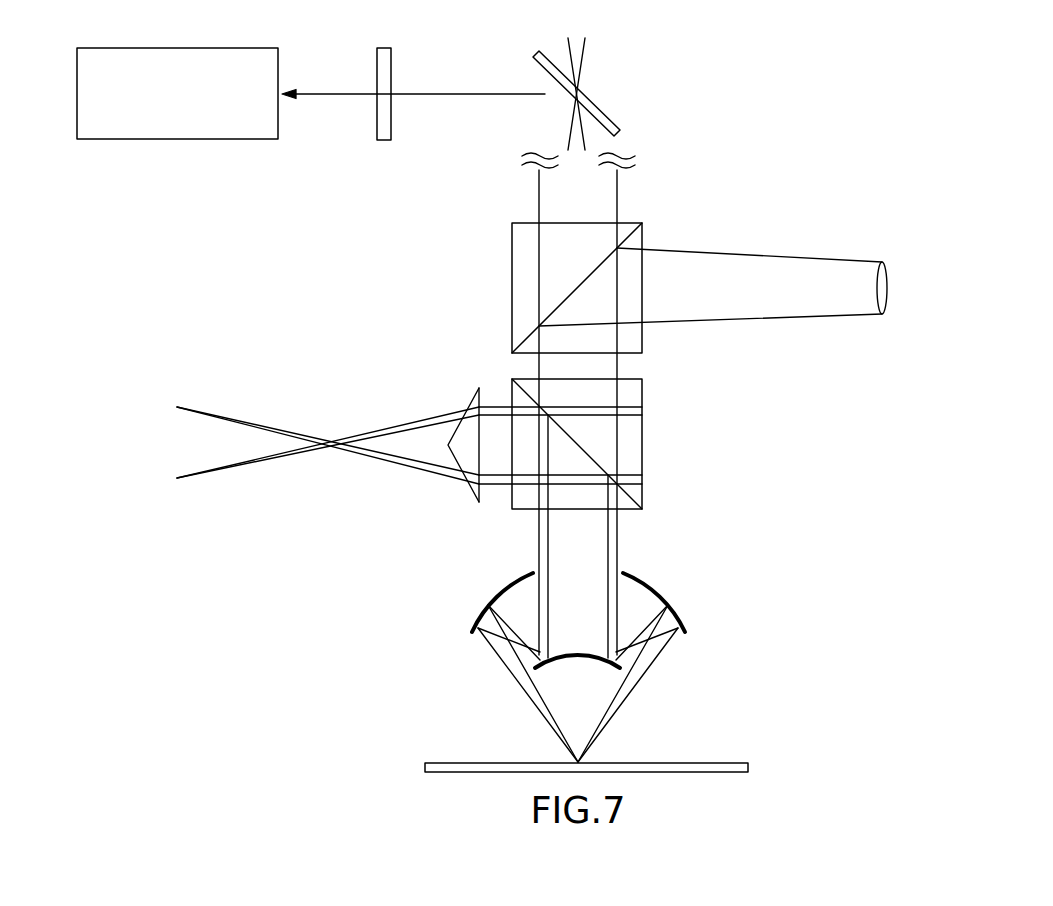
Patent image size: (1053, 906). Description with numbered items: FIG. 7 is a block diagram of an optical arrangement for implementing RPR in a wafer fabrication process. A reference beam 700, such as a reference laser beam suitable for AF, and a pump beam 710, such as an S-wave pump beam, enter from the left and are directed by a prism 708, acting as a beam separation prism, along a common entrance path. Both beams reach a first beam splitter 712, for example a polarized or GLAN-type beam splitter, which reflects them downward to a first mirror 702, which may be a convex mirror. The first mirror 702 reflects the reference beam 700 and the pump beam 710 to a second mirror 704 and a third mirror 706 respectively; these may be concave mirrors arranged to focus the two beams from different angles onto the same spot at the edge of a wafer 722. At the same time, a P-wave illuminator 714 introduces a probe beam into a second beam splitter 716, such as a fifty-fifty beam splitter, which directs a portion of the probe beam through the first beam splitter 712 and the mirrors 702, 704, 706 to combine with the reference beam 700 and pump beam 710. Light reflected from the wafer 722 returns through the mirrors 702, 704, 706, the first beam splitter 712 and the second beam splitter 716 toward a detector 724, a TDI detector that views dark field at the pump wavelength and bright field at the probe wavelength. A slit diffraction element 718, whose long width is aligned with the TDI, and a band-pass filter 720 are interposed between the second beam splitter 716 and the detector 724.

The reference beam 700 is at (272, 430).
The first mirror 702 is at (598, 664).
The second mirror 704 is at (486, 598).
The third mirror 706 is at (670, 598).
The prism 708 is at (473, 400).
The pump beam 710 is at (208, 468).
The first beam splitter 712 is at (645, 412).
The P-wave illuminator 714 is at (884, 262).
The second beam splitter 716 is at (512, 248).
The slit diffraction element 718 is at (537, 54).
The band-pass filter 720 is at (382, 48).
The wafer 722 is at (490, 762).
The detector 724 is at (178, 48).